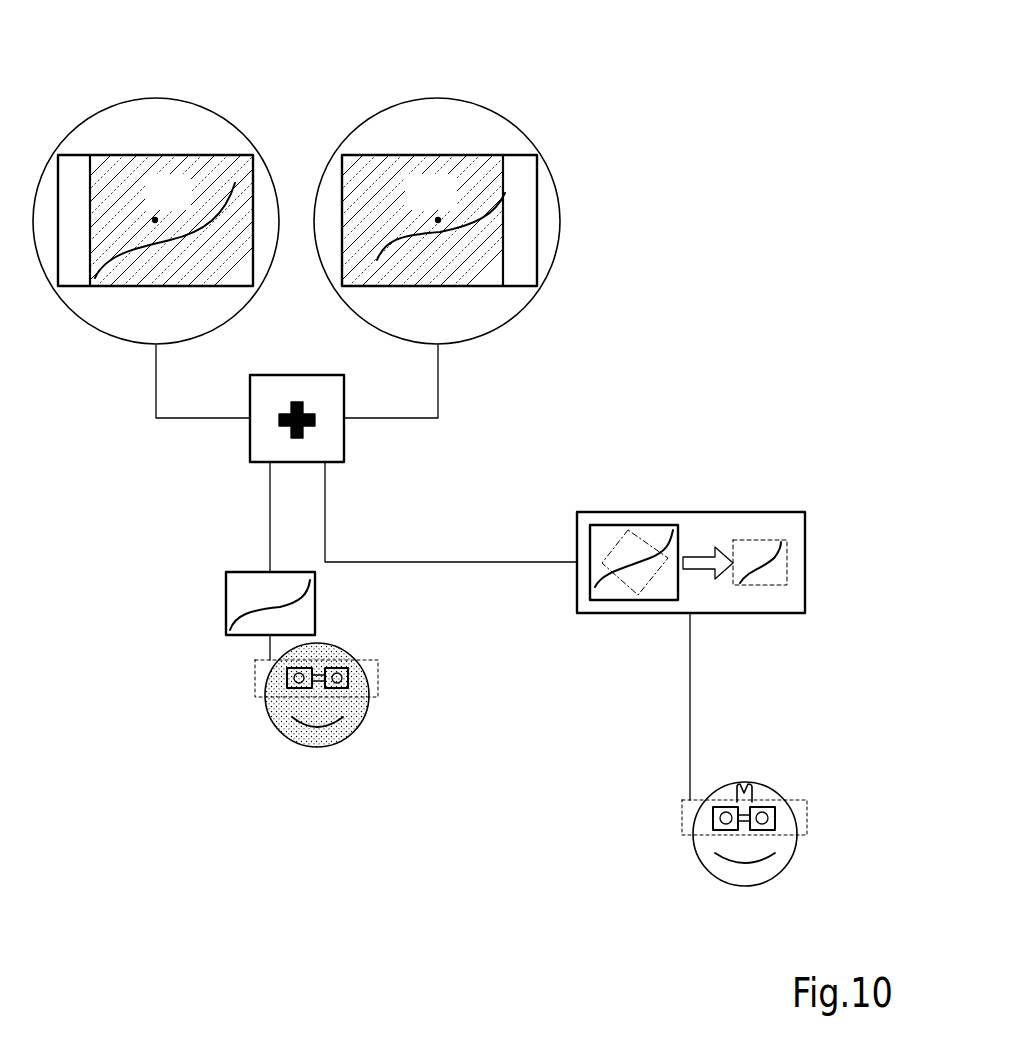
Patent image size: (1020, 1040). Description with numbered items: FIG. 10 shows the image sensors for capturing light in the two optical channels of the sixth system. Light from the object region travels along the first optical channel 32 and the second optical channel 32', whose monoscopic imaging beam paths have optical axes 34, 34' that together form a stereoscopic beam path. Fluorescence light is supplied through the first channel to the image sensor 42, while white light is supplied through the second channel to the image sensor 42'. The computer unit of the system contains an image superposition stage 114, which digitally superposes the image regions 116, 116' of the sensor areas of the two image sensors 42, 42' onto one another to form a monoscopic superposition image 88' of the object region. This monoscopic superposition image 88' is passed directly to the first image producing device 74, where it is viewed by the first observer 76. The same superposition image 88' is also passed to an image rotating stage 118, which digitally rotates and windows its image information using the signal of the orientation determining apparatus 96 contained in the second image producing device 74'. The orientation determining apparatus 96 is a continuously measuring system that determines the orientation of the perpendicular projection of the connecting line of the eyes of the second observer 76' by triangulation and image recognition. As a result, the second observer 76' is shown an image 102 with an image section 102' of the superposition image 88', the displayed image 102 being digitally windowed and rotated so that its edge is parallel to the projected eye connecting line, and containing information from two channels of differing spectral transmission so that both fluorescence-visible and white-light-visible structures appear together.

The first optical channel 32 is at (156, 173).
The second optical channel 32' is at (454, 173).
The image sensor 42 is at (172, 172).
The image sensor 42' is at (414, 172).
The optical axis 34 is at (154, 287).
The optical axis 34' is at (461, 292).
The image region 116 is at (168, 197).
The image region 116' is at (431, 197).
The image superposition stage 114 is at (345, 453).
The monoscopic superposition image 88' is at (419, 605).
The first image producing device 74 is at (343, 649).
The first observer 76 is at (340, 715).
The image rotating stage 118 is at (805, 563).
The image section 102' is at (664, 521).
The image 102 is at (751, 673).
The orientation determining apparatus 96 is at (745, 783).
The second image producing device 74' is at (774, 791).
The second observer 76' is at (771, 854).